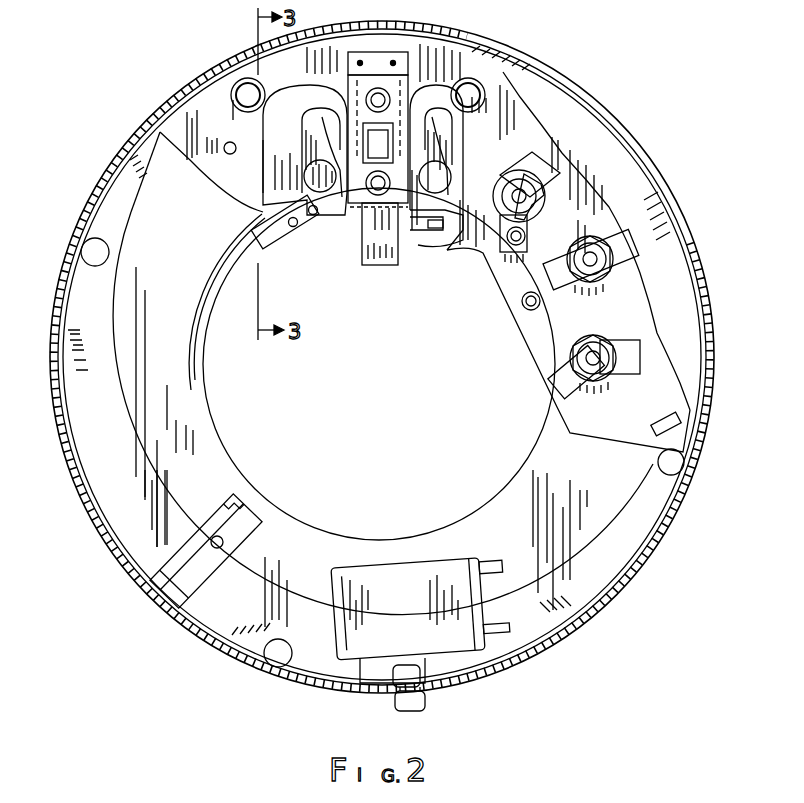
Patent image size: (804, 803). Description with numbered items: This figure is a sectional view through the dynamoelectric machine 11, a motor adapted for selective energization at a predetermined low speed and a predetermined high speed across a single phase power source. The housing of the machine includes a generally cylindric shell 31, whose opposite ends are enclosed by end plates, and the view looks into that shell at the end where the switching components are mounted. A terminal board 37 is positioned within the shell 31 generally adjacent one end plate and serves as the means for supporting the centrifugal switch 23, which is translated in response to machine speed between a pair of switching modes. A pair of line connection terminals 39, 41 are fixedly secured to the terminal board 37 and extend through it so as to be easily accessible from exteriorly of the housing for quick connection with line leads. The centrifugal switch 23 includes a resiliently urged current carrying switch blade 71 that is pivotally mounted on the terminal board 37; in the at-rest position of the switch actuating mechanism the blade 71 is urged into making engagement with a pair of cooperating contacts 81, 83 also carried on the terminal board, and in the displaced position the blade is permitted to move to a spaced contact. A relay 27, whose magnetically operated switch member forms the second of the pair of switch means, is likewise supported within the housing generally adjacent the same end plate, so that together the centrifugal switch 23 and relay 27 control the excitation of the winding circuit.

The dynamoelectric machine 11 is at (618, 96).
The cylindric shell 31 is at (662, 178).
The centrifugal switch 23 is at (331, 258).
The switch blade 71 is at (380, 265).
The contact 81 is at (307, 157).
The contact 83 is at (440, 165).
The line connection terminal 39 is at (494, 194).
The terminal board 37 is at (507, 277).
The line connection terminal 41 is at (580, 372).
The relay 27 is at (417, 637).